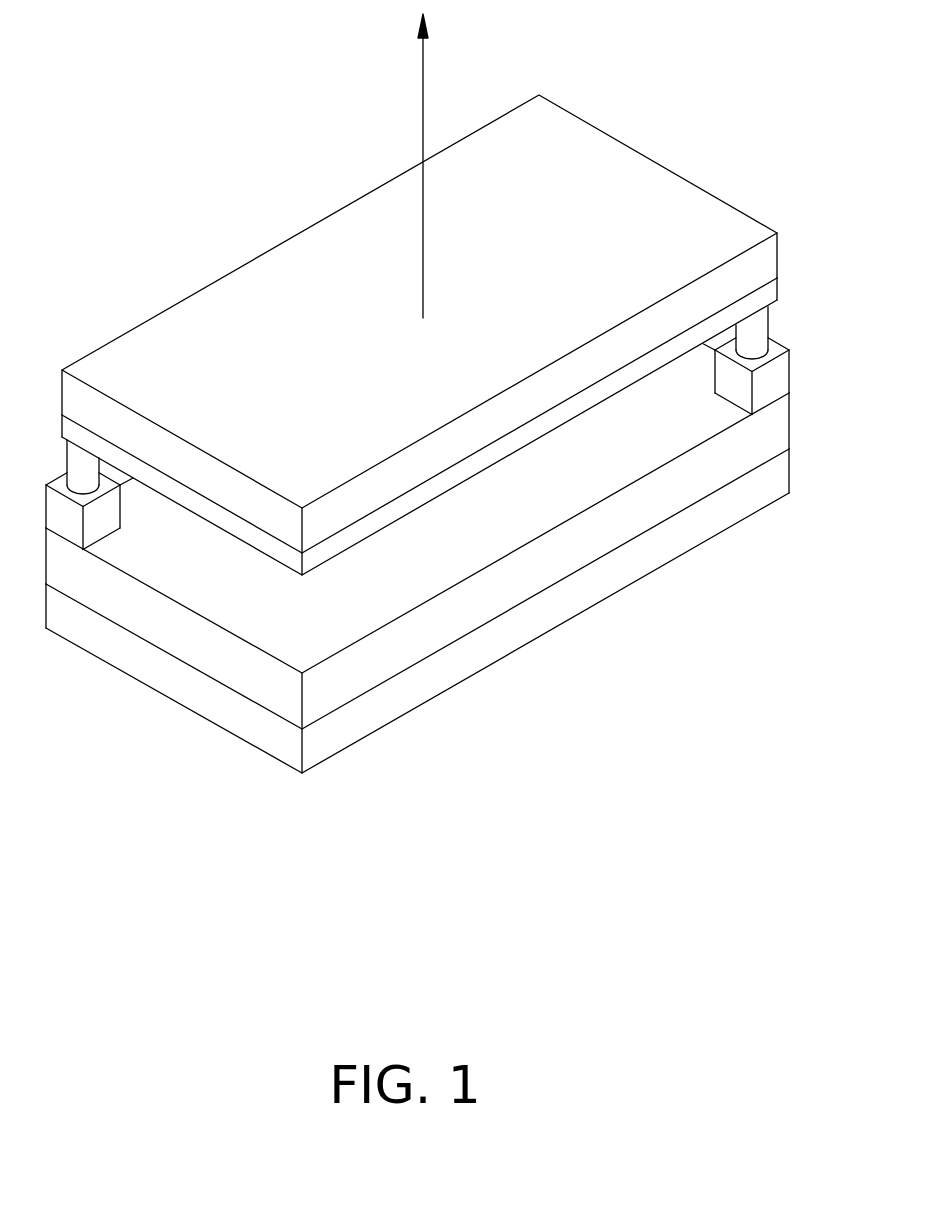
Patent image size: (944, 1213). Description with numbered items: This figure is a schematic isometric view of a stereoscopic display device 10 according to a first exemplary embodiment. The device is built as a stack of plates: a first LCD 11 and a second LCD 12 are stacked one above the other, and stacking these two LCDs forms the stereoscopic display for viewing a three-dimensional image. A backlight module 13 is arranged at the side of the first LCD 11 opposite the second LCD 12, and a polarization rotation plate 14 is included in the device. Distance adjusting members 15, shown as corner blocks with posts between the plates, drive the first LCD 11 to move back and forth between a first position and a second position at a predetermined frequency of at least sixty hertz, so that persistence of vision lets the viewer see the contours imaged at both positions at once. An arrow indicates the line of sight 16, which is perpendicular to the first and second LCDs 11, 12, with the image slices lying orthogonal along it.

The stereoscopic display device 10 is at (450, 432).
The first LCD 11 is at (778, 423).
The second LCD 12 is at (634, 183).
The backlight module 13 is at (775, 480).
The polarization rotation plate 14 is at (770, 290).
The distance adjusting member 15 is at (317, 645).
The line of sight 16 is at (422, 120).